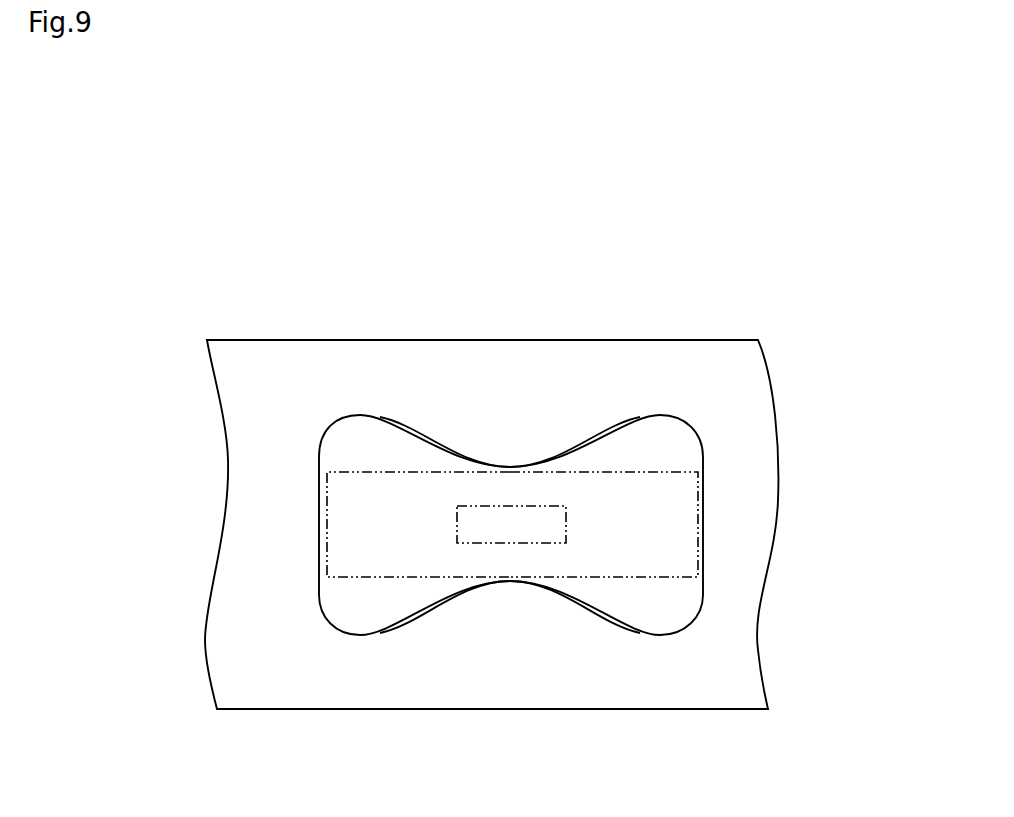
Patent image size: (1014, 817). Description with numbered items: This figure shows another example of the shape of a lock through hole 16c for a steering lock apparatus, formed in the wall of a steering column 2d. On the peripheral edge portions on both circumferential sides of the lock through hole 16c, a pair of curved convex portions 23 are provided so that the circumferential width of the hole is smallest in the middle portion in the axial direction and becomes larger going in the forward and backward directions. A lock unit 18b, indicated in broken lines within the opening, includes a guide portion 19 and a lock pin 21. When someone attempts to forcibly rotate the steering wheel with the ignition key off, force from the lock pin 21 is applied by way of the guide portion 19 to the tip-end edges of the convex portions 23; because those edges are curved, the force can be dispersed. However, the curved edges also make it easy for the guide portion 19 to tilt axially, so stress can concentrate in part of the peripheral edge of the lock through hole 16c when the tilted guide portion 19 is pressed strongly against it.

The steering column 2d is at (727, 409).
The lock through hole 16c is at (524, 540).
The convex portion 23 is at (517, 460).
The lock unit 18b is at (360, 525).
The guide portion 19 is at (663, 517).
The lock pin 21 is at (548, 529).